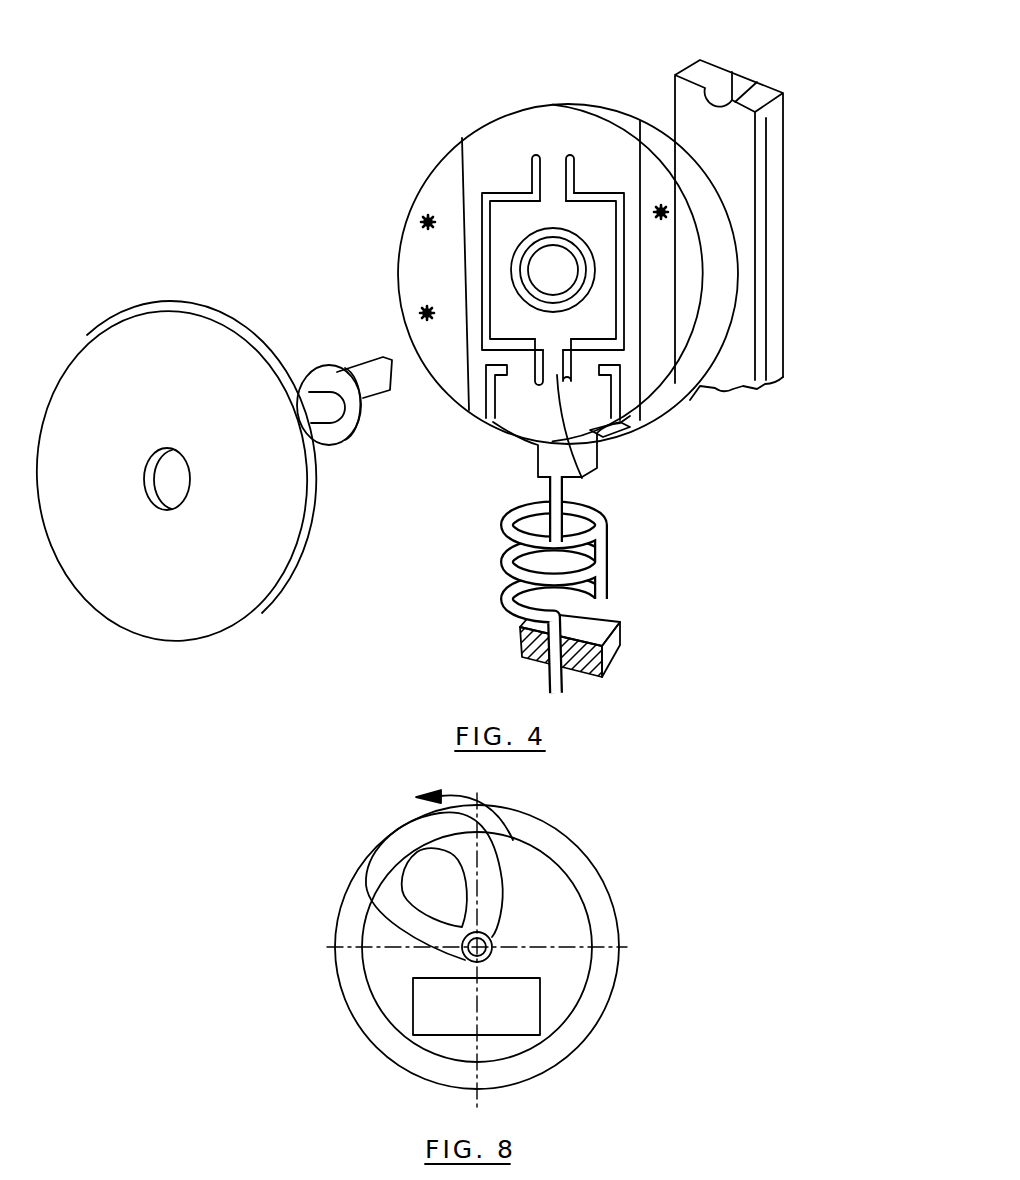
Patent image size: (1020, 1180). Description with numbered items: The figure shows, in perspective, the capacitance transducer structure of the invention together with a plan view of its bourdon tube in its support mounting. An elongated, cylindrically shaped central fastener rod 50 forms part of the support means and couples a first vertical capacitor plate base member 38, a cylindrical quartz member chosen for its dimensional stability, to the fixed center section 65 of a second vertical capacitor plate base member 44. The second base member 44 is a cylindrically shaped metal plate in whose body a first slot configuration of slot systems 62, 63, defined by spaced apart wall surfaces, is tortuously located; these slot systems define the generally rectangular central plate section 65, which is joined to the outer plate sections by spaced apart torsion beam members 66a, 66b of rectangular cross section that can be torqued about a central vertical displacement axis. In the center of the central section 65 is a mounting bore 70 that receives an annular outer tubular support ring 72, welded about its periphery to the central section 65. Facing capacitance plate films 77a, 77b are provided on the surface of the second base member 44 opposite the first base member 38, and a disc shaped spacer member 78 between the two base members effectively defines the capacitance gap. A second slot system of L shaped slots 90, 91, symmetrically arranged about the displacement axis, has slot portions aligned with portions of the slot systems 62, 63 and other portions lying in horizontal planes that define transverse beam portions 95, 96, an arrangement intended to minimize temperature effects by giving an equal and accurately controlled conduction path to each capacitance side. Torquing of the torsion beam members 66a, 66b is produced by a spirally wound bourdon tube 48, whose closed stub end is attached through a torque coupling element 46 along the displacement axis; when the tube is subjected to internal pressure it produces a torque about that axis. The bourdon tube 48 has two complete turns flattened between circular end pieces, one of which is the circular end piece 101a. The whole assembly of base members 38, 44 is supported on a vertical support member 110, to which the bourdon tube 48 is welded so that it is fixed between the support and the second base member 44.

In FIG. 4, the first vertical capacitor plate base member 38 is at (217, 589).
In FIG. 4, the second vertical capacitor plate base member 44 is at (685, 355).
In FIG. 4, the torque coupling element 46 is at (510, 466).
In FIG. 4, the spirally wound bourdon tube 48 is at (502, 593).
In FIG. 8, the spirally wound bourdon tube 48 is at (352, 1015).
In FIG. 4, the central fastener rod 50 is at (370, 385).
In FIG. 4, the slot system 62 is at (489, 266).
In FIG. 4, the slot system 63 is at (623, 317).
In FIG. 4, the central plate section 65 is at (605, 305).
In FIG. 4, the torsion beam member 66a is at (553, 158).
In FIG. 4, the torsion beam member 66b is at (582, 478).
In FIG. 4, the mounting bore 70 is at (577, 247).
In FIG. 4, the outer tubular support ring 72 is at (543, 240).
In FIG. 4, the capacitance plate film 77a is at (433, 203).
In FIG. 4, the capacitance plate film 77b is at (688, 255).
In FIG. 4, the spacer member 78 is at (323, 368).
In FIG. 4, the L shaped slot 90 is at (492, 420).
In FIG. 4, the L shaped slot 91 is at (627, 418).
In FIG. 4, the transverse beam portion 95 is at (487, 356).
In FIG. 4, the transverse beam portion 96 is at (625, 357).
In FIG. 8, the circular end piece 101a is at (517, 934).
In FIG. 8, the vertical support member 110 is at (515, 1035).